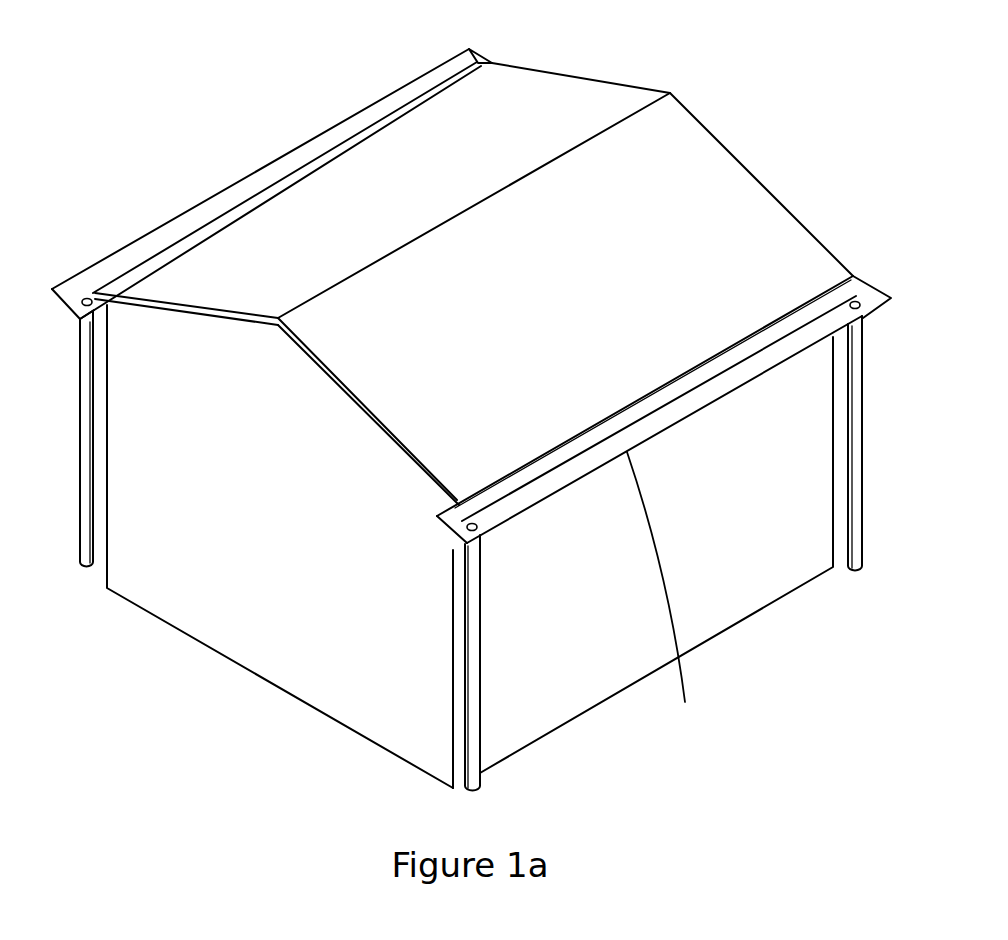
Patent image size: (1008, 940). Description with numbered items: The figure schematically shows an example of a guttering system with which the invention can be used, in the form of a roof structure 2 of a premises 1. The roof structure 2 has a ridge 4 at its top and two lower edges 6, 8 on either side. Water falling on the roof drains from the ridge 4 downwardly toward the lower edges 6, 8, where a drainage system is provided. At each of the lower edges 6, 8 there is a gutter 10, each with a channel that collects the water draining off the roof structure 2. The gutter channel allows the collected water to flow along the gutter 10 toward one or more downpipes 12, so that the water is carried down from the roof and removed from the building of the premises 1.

The premises 1 is at (258, 625).
The roof structure 2 is at (707, 182).
The ridge 4 is at (512, 102).
The lower edge 6 is at (74, 316).
The lower edge 8 is at (664, 592).
The gutter 10 is at (163, 225).
The downpipe 12 is at (78, 543).